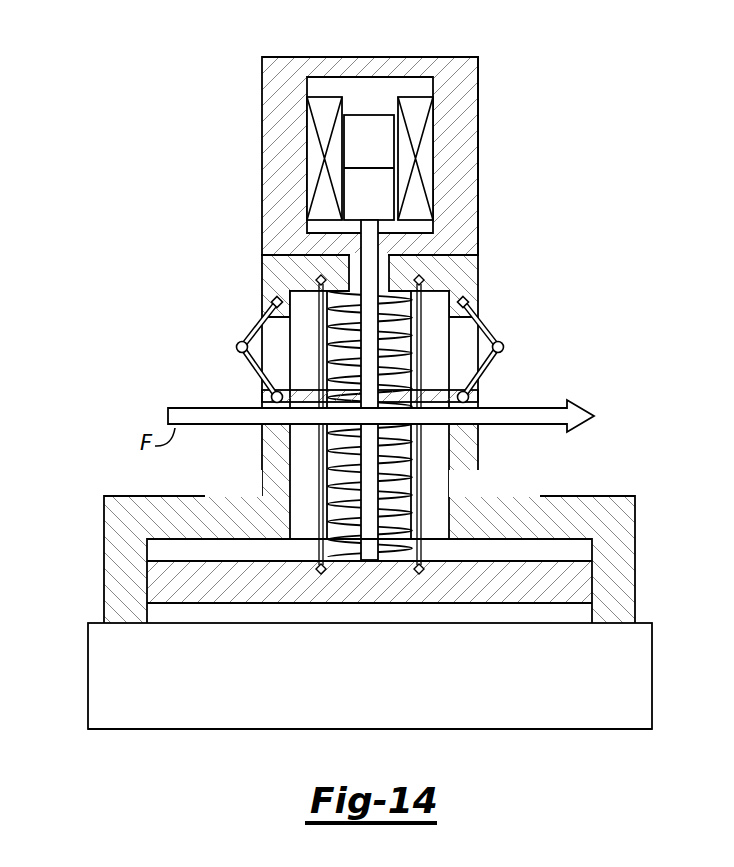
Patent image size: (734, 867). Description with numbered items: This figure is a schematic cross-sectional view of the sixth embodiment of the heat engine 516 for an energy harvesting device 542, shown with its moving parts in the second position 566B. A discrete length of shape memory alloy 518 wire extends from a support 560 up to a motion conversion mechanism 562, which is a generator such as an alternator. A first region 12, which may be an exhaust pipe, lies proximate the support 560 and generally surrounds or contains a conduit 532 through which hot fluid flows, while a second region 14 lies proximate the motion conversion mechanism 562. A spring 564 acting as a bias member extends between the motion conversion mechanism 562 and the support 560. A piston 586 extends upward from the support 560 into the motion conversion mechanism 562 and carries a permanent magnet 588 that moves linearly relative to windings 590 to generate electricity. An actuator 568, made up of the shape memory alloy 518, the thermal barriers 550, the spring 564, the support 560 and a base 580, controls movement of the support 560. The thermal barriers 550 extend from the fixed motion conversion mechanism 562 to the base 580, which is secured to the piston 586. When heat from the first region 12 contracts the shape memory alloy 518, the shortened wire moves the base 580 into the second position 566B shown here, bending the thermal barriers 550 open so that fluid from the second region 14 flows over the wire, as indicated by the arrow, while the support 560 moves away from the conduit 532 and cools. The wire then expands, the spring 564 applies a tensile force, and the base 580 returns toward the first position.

The first region 12 is at (380, 690).
The second region 14 is at (222, 386).
The heat engine 516 is at (135, 302).
The shape memory alloy 518 is at (322, 485).
The conduit 532 is at (578, 730).
The energy harvesting device 542 is at (155, 81).
The thermal barriers 550 is at (257, 324).
The support 560 is at (552, 561).
The motion conversion mechanism 562 is at (283, 153).
The spring 564 is at (340, 453).
The second position 566B is at (208, 271).
The actuator 568 is at (531, 281).
The base 580 is at (437, 392).
The piston 586 is at (378, 457).
The permanent magnet 588 is at (369, 115).
The windings 590 is at (413, 119).